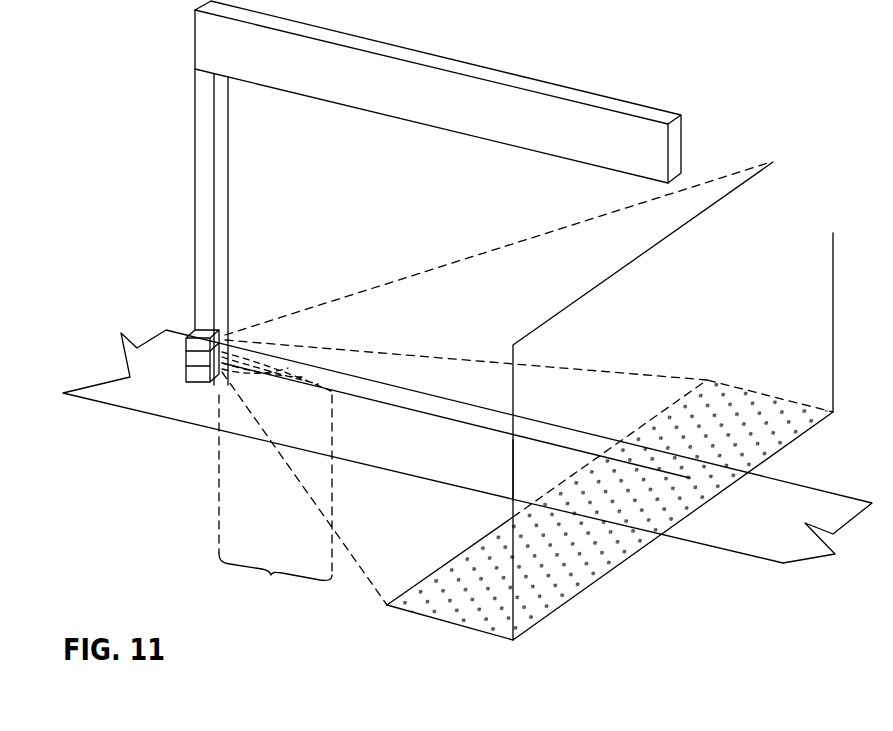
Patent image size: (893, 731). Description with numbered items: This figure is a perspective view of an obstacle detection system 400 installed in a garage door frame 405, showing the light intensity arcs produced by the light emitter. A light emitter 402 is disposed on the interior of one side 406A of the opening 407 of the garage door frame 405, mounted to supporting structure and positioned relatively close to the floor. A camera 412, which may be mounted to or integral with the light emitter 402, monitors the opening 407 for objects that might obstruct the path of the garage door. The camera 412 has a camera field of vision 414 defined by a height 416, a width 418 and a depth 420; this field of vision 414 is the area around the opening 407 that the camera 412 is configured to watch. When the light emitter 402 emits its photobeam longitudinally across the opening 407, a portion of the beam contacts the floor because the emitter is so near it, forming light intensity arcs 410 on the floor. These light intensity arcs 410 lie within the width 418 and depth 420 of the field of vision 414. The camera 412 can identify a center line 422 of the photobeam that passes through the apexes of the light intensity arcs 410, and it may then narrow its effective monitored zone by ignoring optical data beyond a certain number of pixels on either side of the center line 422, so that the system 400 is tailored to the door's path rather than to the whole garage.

The obstacle detection system 400 is at (130, 321).
The light emitter 402 is at (200, 360).
The garage door frame 405 is at (548, 107).
The one side of the opening 406A is at (203, 215).
The opening of the garage door frame 407 is at (250, 140).
The light intensity arcs 410 is at (271, 575).
The camera 412 is at (193, 335).
The camera field of vision 414 is at (752, 505).
The height 416 is at (513, 453).
The width 418 is at (535, 331).
The depth 420 is at (423, 617).
The center line 422 is at (348, 397).